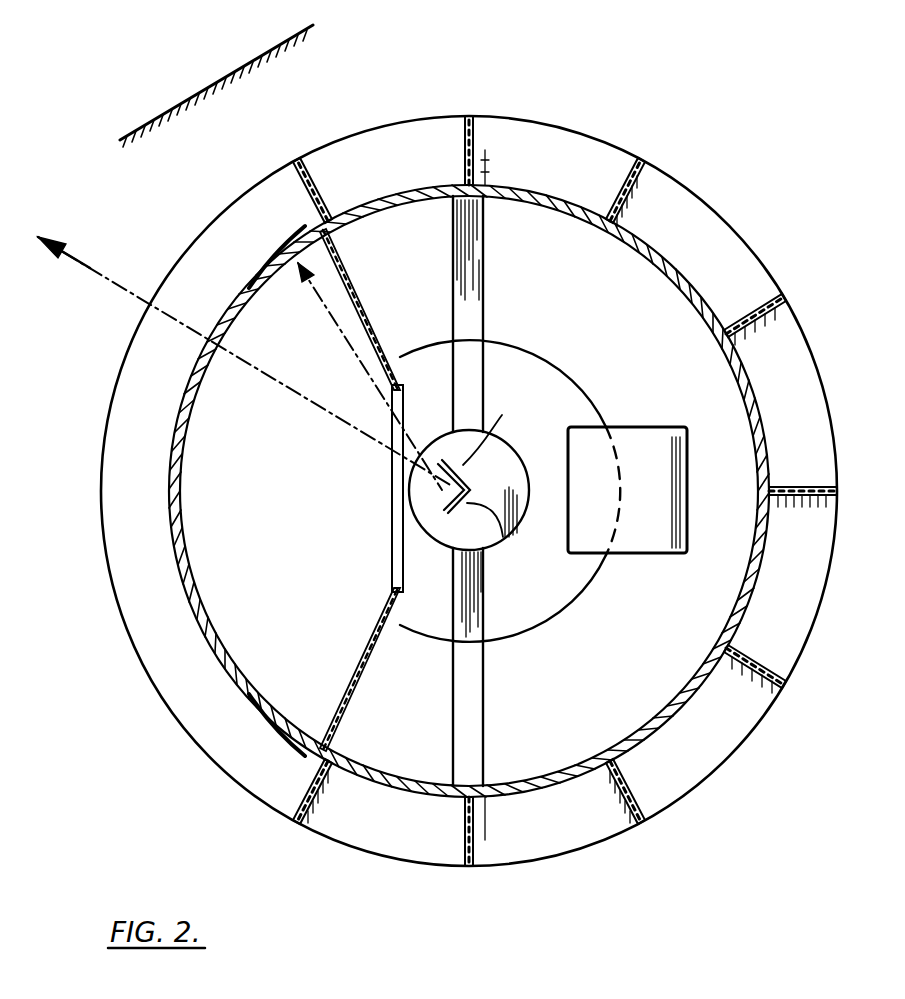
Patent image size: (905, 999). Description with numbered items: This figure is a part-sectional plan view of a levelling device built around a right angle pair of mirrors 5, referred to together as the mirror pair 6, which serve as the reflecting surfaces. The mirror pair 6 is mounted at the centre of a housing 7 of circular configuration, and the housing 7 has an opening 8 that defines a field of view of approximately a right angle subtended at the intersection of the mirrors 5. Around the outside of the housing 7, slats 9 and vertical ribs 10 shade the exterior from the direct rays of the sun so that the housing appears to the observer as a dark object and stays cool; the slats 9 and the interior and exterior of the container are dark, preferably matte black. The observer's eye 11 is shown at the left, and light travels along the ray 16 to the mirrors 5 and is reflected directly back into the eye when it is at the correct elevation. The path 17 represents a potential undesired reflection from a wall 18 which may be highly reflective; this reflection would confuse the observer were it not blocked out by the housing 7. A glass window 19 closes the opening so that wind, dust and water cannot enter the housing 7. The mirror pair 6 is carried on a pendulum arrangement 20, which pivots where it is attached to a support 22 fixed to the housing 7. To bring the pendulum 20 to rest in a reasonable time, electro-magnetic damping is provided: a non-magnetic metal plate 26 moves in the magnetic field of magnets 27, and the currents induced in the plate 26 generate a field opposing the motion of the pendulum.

The mirrors 5 is at (507, 543).
The mirror pair 6 is at (490, 486).
The housing 7 is at (642, 260).
The opening 8 is at (173, 484).
The slats 9 is at (566, 150).
The vertical ribs 10 is at (650, 183).
The observer's eye 11 is at (61, 264).
The ray 16 is at (258, 372).
The path 17 is at (358, 376).
The wall 18 is at (247, 63).
The glass window 19 is at (398, 513).
The pendulum arrangement 20 is at (496, 557).
The support 22 is at (463, 298).
The non-magnetic metal plate 26 is at (552, 362).
The magnets 27 is at (650, 520).